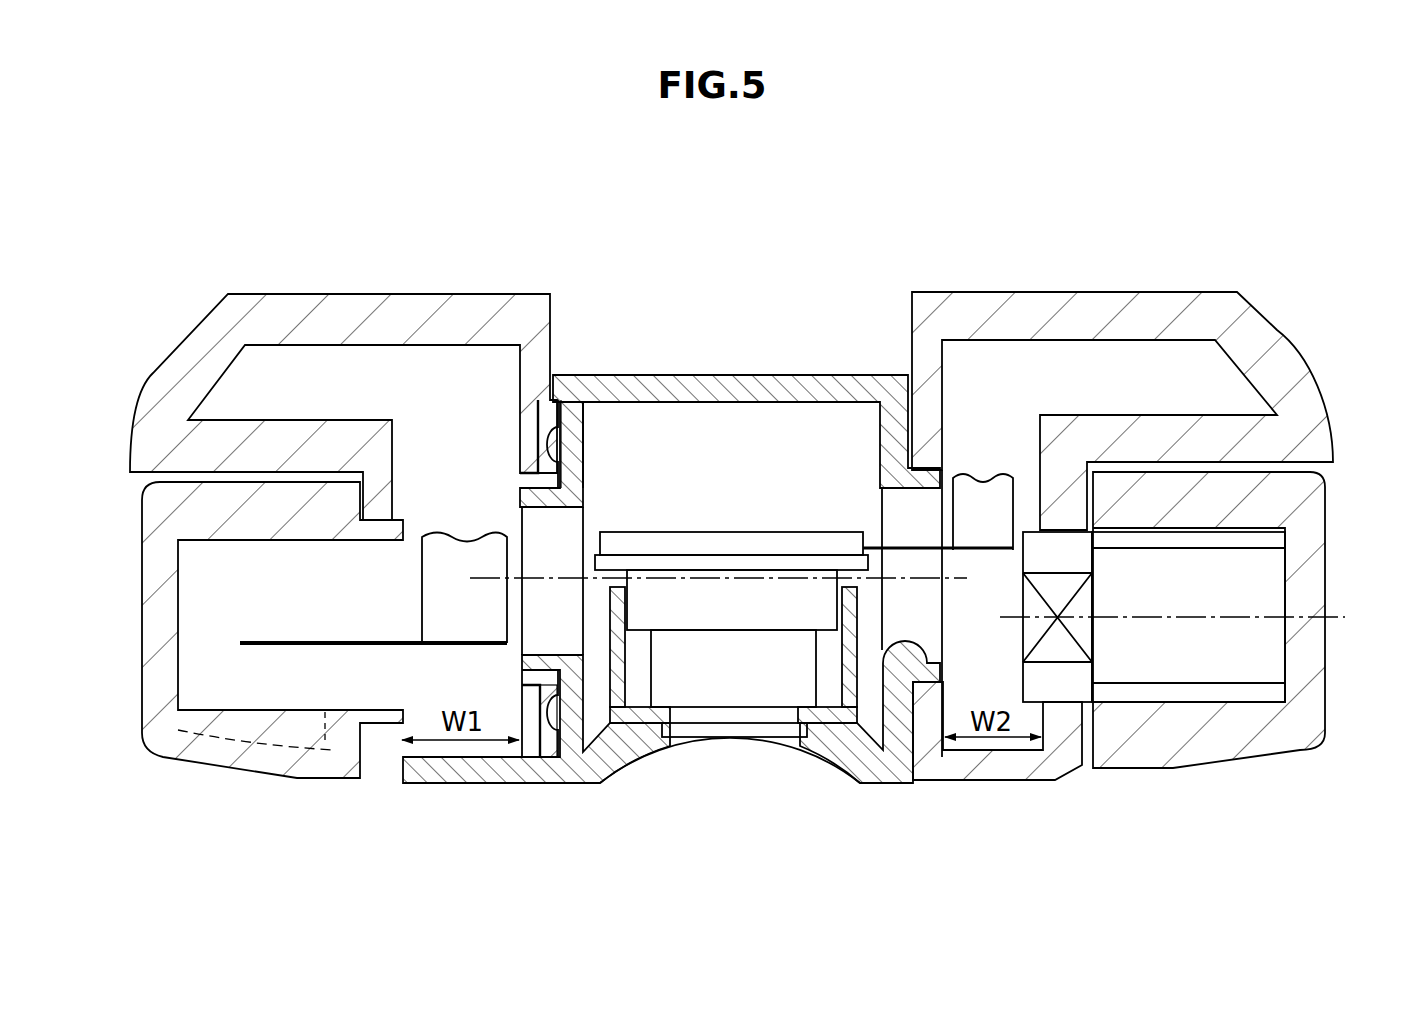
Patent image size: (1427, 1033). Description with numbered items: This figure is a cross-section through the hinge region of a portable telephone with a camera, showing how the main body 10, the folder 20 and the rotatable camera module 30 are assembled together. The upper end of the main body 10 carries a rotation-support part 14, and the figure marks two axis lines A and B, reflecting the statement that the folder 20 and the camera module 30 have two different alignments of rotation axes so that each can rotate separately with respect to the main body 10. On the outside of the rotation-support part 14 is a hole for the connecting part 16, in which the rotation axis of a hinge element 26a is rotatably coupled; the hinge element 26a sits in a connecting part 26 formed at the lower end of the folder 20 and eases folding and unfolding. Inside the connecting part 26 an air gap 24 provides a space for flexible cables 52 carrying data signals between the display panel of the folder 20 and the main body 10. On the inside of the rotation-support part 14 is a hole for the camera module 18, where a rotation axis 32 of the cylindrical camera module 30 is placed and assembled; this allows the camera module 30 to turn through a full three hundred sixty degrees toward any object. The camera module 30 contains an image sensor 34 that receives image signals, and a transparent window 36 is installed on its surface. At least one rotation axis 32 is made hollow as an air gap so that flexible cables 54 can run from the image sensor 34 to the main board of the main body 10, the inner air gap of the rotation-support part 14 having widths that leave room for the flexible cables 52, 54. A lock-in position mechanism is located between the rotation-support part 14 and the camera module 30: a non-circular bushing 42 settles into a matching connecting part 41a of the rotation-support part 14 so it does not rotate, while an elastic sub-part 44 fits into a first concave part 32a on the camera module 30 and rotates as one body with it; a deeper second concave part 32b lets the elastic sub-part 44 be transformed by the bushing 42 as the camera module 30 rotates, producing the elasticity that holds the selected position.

The main body 10 is at (187, 334).
The rotation-support part 14 is at (992, 763).
The hole for the connecting part 16 is at (1092, 696).
The hole for the camera module 18 is at (925, 656).
The folder 20 is at (182, 764).
The air gap 24 is at (197, 678).
The connecting part 26 is at (1267, 735).
The hinge element 26a is at (1059, 690).
The camera module 30 is at (803, 371).
The rotation axis 32 is at (903, 610).
The first concave part 32a is at (565, 375).
The second concave part 32b is at (583, 417).
The image sensor 34 is at (720, 565).
The transparent window 36 is at (730, 738).
The connecting part of the rotation-support part 41a is at (540, 745).
The bushing 42 is at (518, 470).
The elastic sub-part 44 is at (548, 398).
The flexible cables 52 is at (443, 590).
The flexible cables 54 is at (990, 500).
The motor axis A is at (1243, 614).
The optical axis B is at (487, 578).